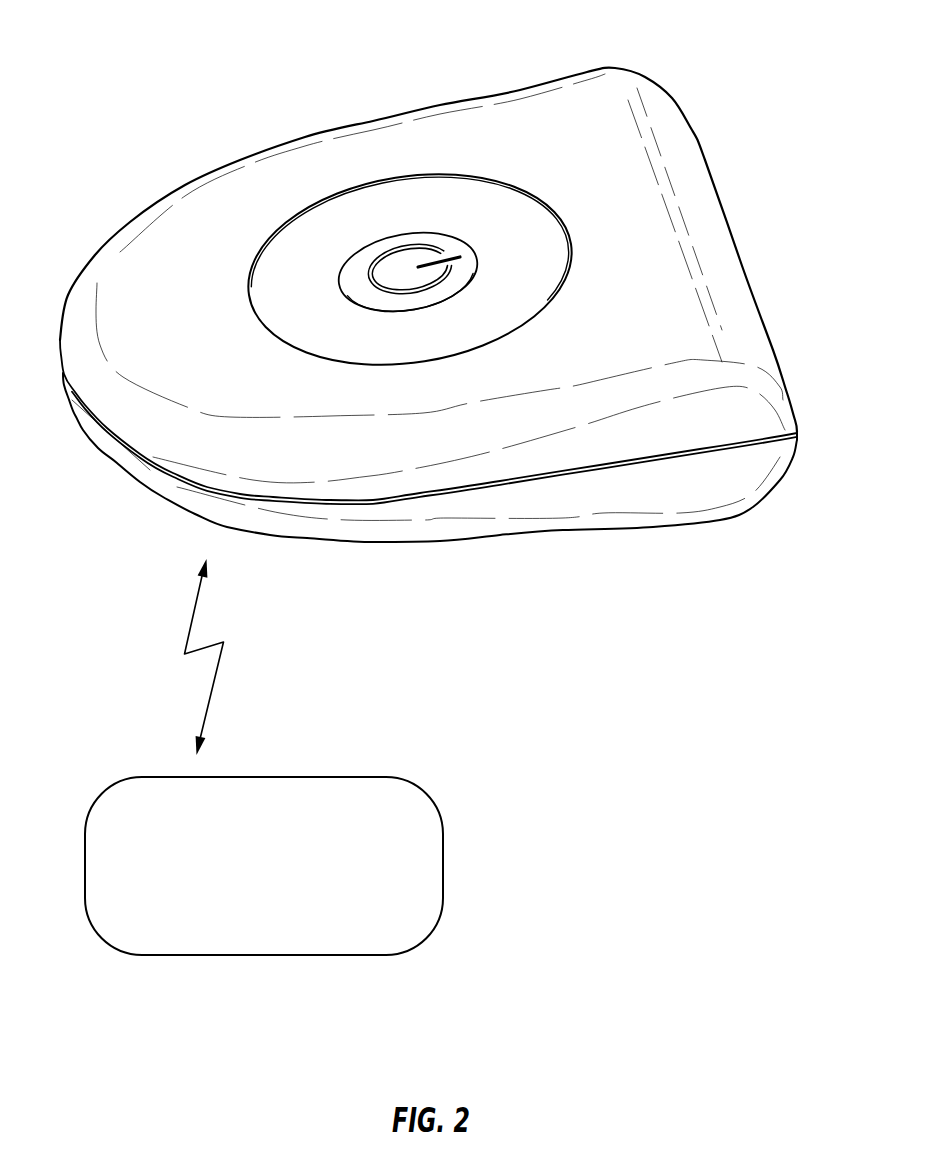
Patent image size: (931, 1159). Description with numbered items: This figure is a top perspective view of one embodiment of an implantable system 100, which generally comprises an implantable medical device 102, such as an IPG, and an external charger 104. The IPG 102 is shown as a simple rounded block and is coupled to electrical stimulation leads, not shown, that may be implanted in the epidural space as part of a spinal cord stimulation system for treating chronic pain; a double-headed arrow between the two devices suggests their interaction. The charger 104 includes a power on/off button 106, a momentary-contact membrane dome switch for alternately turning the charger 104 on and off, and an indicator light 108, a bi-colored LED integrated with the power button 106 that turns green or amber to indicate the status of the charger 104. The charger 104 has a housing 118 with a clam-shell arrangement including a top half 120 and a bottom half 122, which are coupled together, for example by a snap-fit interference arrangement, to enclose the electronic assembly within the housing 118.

The implantable system 100 is at (172, 46).
The implantable medical device 102 is at (357, 803).
The external charger 104 is at (488, 96).
The power on/off button 106 is at (352, 268).
The indicator light 108 is at (405, 247).
The housing 118 is at (122, 218).
The top half 120 is at (402, 155).
The bottom half 122 is at (572, 502).